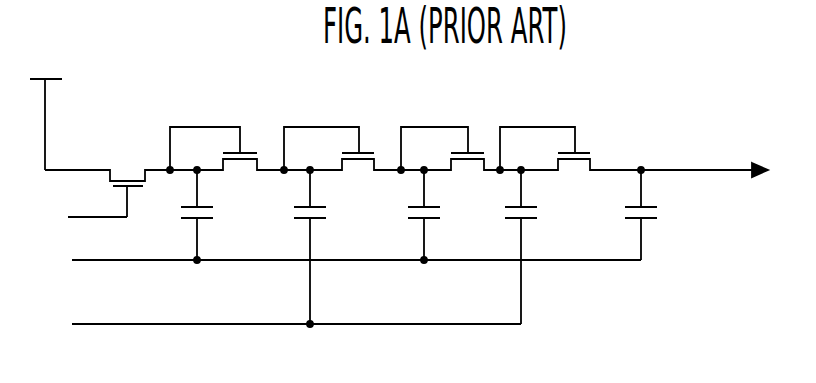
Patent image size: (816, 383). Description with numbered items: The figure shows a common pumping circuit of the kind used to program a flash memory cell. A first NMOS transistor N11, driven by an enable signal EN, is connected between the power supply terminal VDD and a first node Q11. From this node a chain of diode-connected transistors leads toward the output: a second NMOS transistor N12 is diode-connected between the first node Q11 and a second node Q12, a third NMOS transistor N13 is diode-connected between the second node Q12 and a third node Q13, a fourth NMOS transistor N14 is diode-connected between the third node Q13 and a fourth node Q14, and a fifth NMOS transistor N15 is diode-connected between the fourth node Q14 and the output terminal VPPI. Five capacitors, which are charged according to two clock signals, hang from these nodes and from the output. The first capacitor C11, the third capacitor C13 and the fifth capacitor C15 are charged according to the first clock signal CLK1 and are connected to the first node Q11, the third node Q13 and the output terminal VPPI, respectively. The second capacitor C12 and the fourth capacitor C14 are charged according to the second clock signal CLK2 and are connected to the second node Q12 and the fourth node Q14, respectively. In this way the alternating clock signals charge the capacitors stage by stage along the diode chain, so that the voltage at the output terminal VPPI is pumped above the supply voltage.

The power supply terminal VDD is at (46, 110).
The first NMOS transistor N11 is at (107, 179).
The enable signal EN is at (85, 217).
The first node Q11 is at (203, 150).
The second node Q12 is at (320, 150).
The third node Q13 is at (433, 150).
The fourth node Q14 is at (536, 150).
The second NMOS transistor N12 is at (227, 175).
The third NMOS transistor N13 is at (342, 175).
The fourth NMOS transistor N14 is at (450, 175).
The fifth NMOS transistor N15 is at (570, 175).
The first capacitor C11 is at (213, 215).
The second capacitor C12 is at (325, 247).
The third capacitor C13 is at (440, 215).
The fourth capacitor C14 is at (536, 245).
The fifth capacitor C15 is at (657, 213).
The output terminal VPPI is at (704, 154).
The first clock signal CLK1 is at (337, 262).
The second clock signal CLK2 is at (277, 327).